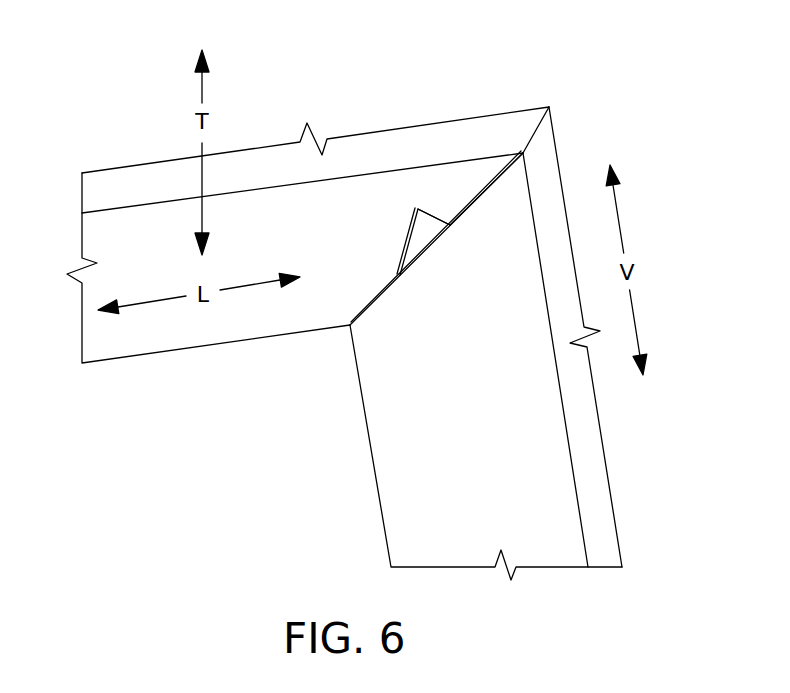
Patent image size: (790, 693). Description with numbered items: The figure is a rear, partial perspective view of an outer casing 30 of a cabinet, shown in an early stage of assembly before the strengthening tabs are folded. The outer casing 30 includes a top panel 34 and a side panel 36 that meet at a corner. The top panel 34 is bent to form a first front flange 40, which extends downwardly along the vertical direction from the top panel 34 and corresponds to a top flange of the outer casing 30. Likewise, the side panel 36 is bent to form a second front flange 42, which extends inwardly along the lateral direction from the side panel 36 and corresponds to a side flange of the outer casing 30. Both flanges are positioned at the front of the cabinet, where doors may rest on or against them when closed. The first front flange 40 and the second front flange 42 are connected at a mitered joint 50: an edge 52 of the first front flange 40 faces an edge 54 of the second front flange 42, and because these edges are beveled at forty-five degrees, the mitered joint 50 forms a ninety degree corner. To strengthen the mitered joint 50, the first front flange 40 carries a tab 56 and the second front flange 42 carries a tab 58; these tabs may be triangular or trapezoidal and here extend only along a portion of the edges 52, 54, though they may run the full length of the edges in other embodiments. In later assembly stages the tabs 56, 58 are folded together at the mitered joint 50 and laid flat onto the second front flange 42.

The outer casing 30 is at (528, 138).
The top panel 34 is at (390, 150).
The side panel 36 is at (575, 412).
The first front flange 40 is at (155, 327).
The second front flange 42 is at (447, 452).
The mitered joint 50 is at (344, 342).
The edge 52 is at (370, 281).
The edge 54 is at (500, 204).
The tab 56 is at (411, 233).
The tab 58 is at (427, 233).